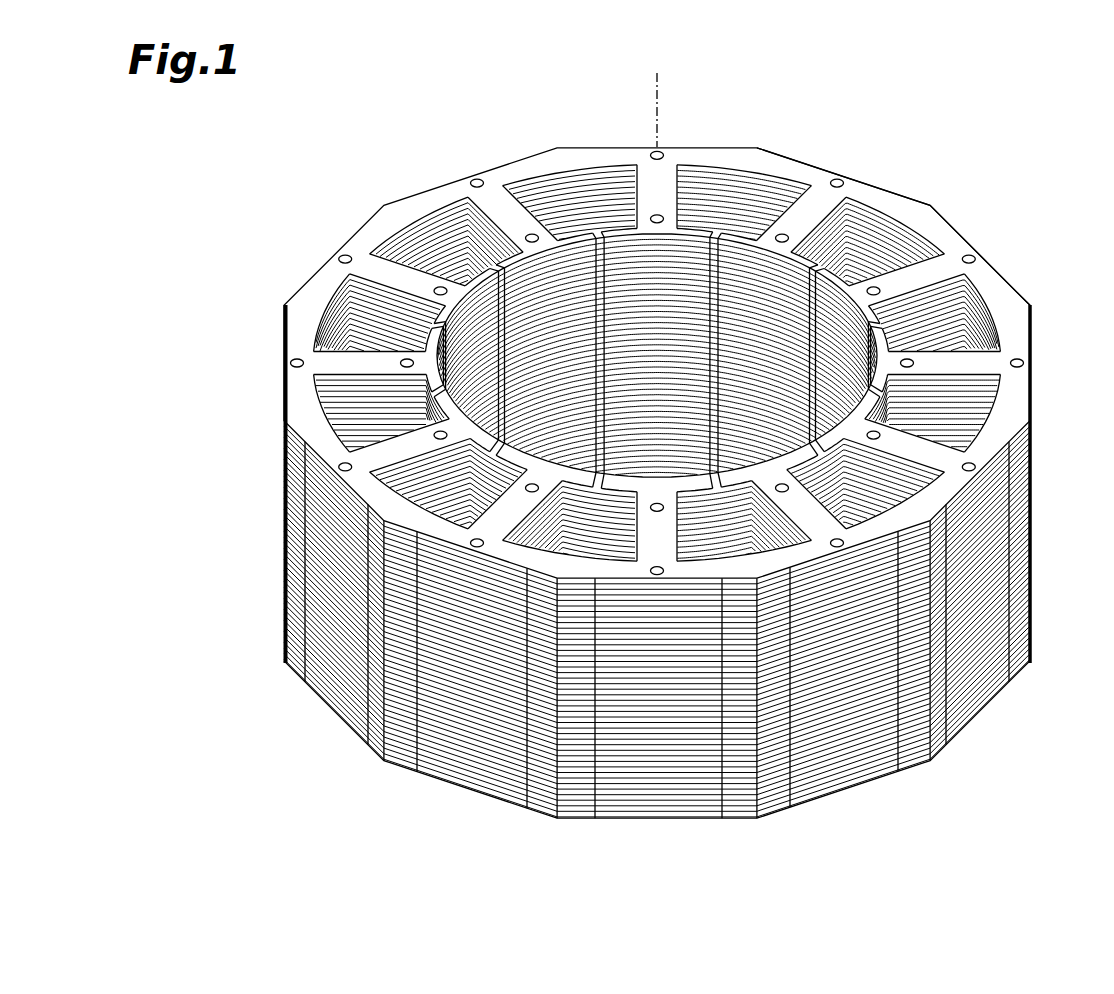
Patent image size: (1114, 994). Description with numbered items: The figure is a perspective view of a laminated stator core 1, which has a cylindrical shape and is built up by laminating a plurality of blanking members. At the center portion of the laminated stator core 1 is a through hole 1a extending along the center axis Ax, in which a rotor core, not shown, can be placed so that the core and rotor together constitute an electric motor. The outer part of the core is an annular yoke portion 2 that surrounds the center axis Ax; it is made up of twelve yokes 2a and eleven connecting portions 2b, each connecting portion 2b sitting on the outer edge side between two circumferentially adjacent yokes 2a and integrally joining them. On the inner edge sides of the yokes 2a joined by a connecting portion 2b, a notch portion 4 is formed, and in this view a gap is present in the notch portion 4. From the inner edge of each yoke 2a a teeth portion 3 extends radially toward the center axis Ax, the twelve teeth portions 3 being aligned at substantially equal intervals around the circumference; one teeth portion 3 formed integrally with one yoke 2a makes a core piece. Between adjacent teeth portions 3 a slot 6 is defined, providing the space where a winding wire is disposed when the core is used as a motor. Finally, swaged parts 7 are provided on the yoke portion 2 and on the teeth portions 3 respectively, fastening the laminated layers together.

The laminated stator core 1 is at (693, 445).
The through hole 1a is at (767, 285).
The yoke portion 2 is at (657, 561).
The yoke 2a is at (992, 280).
The connecting portion 2b is at (902, 207).
The teeth portion 3 is at (500, 213).
The notch portion 4 is at (412, 218).
The slot 6 is at (333, 292).
The swaged part 7 is at (912, 368).
The center axis Ax is at (660, 96).